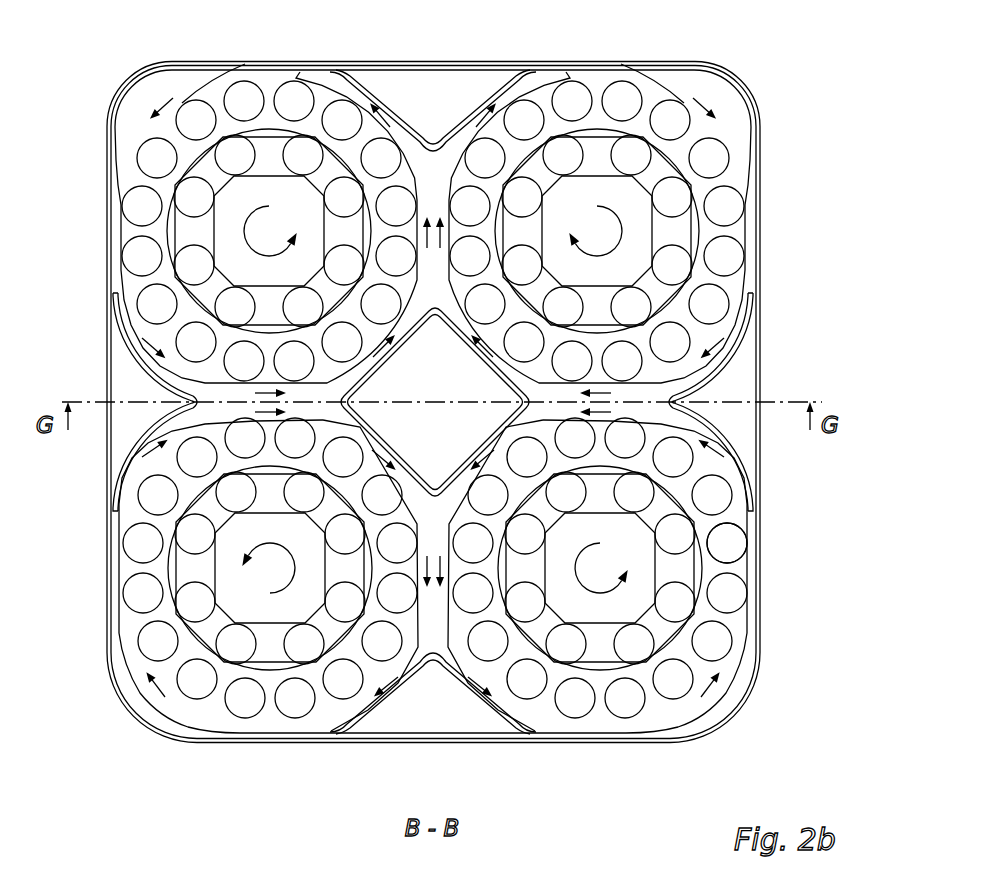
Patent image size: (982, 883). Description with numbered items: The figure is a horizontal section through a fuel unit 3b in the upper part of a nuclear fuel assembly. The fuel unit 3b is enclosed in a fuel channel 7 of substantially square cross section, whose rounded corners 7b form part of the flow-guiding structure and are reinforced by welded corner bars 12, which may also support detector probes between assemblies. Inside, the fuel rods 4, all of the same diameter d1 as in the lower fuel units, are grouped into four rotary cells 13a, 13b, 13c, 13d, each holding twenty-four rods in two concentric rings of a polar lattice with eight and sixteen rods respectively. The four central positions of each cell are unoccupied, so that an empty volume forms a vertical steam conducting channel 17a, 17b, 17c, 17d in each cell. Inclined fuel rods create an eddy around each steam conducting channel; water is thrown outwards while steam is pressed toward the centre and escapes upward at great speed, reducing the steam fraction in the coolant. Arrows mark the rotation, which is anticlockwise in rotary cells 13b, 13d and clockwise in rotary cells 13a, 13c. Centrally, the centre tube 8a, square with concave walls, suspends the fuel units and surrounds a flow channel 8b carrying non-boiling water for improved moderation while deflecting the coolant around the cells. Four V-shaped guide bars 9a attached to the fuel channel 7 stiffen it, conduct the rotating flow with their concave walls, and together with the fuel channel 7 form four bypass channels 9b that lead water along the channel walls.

The fuel unit 3b is at (782, 262).
The fuel rods 4 is at (747, 620).
The fuel channel 7 is at (762, 233).
The corners of the fuel channel 7b is at (738, 683).
The centre tube 8a is at (752, 320).
The flow channel 8b is at (472, 426).
The guide bars 9a is at (516, 718).
The bypass channels 9b is at (413, 713).
The corner bars 12 is at (137, 723).
The rotary cell 13a is at (124, 622).
The rotary cell 13b is at (244, 66).
The rotary cell 13c is at (652, 83).
The rotary cell 13d is at (750, 622).
The steam conducting channel 17a is at (279, 612).
The steam conducting channel 17b is at (270, 187).
The steam conducting channel 17c is at (611, 190).
The steam conducting channel 17d is at (606, 612).
The fuel rod diameter d1 is at (707, 542).